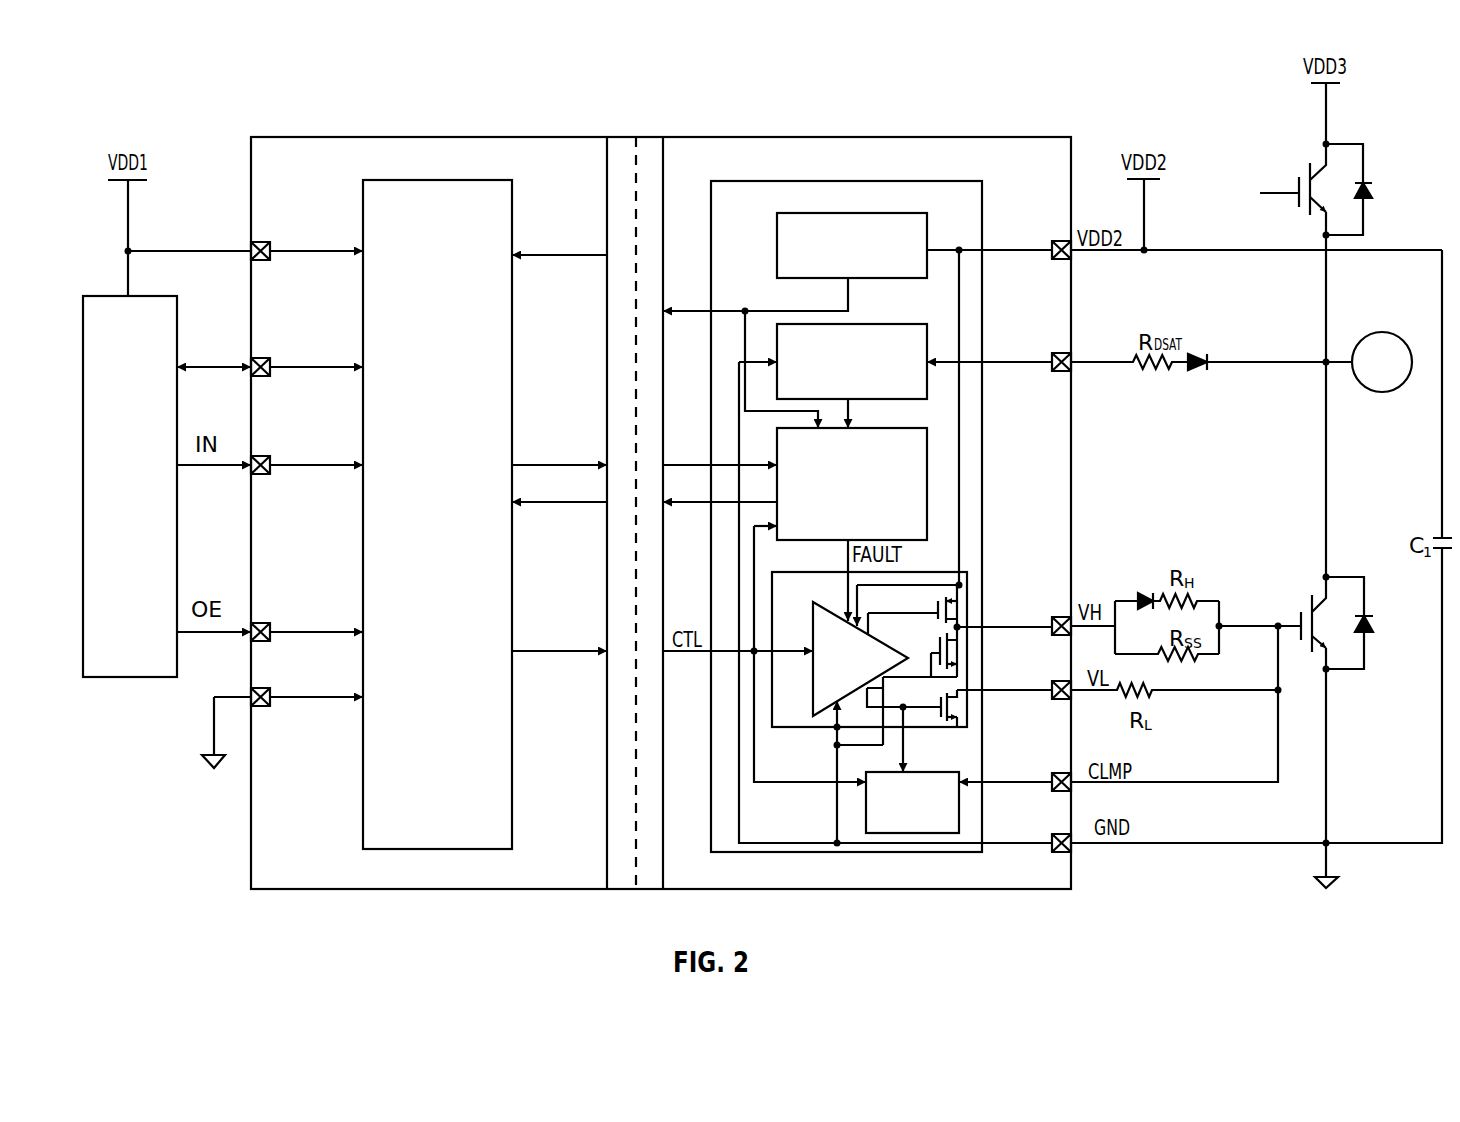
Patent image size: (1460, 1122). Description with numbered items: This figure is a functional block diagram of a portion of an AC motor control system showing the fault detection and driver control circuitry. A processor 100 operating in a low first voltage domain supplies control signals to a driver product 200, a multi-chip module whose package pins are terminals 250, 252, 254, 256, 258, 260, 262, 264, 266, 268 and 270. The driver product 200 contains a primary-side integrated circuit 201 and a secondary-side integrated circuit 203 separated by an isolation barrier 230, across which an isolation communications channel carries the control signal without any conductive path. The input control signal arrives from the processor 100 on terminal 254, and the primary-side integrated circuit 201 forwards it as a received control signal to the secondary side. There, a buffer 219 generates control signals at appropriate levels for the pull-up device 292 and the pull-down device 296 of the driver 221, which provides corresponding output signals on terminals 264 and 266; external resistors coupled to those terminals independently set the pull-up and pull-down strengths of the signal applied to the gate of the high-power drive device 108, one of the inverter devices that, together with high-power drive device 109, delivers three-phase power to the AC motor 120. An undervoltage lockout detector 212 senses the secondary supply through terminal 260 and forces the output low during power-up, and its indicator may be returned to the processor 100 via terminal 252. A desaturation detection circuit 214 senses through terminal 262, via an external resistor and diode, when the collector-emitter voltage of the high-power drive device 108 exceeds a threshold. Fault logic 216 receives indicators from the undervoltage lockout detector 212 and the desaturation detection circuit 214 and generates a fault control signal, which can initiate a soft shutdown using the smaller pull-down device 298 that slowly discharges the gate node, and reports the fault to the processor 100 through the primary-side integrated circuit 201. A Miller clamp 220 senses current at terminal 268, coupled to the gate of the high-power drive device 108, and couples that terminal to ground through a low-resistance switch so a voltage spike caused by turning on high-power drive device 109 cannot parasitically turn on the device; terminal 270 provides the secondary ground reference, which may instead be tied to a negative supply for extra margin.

The processor 100 is at (147, 500).
The driver product 200 is at (405, 137).
The primary-side integrated circuit 201 is at (452, 579).
The secondary-side integrated circuit 203 is at (755, 214).
The isolation barrier 230 is at (664, 210).
The undervoltage lockout detector 212 is at (868, 274).
The desaturation detection circuit 214 is at (868, 393).
The fault logic 216 is at (868, 511).
The buffer 219 is at (852, 683).
The Miller clamp 220 is at (929, 831).
The driver 221 is at (808, 599).
The pull-up device 292 is at (937, 606).
The pull-down device for soft shutdown 298 is at (940, 640).
The pull-down device 296 is at (941, 700).
The terminal 250 is at (272, 248).
The terminal 252 is at (272, 364).
The terminal 254 is at (272, 462).
The terminal 256 is at (272, 629).
The terminal 258 is at (272, 694).
The terminal 260 is at (1051, 244).
The terminal 262 is at (1051, 356).
The terminal 264 is at (1051, 620).
The terminal 266 is at (1051, 684).
The terminal 268 is at (1051, 776).
The terminal 270 is at (1051, 837).
The high-power drive device 108 is at (1293, 618).
The high-power drive device 109 is at (1294, 188).
The AC motor 120 is at (1384, 331).